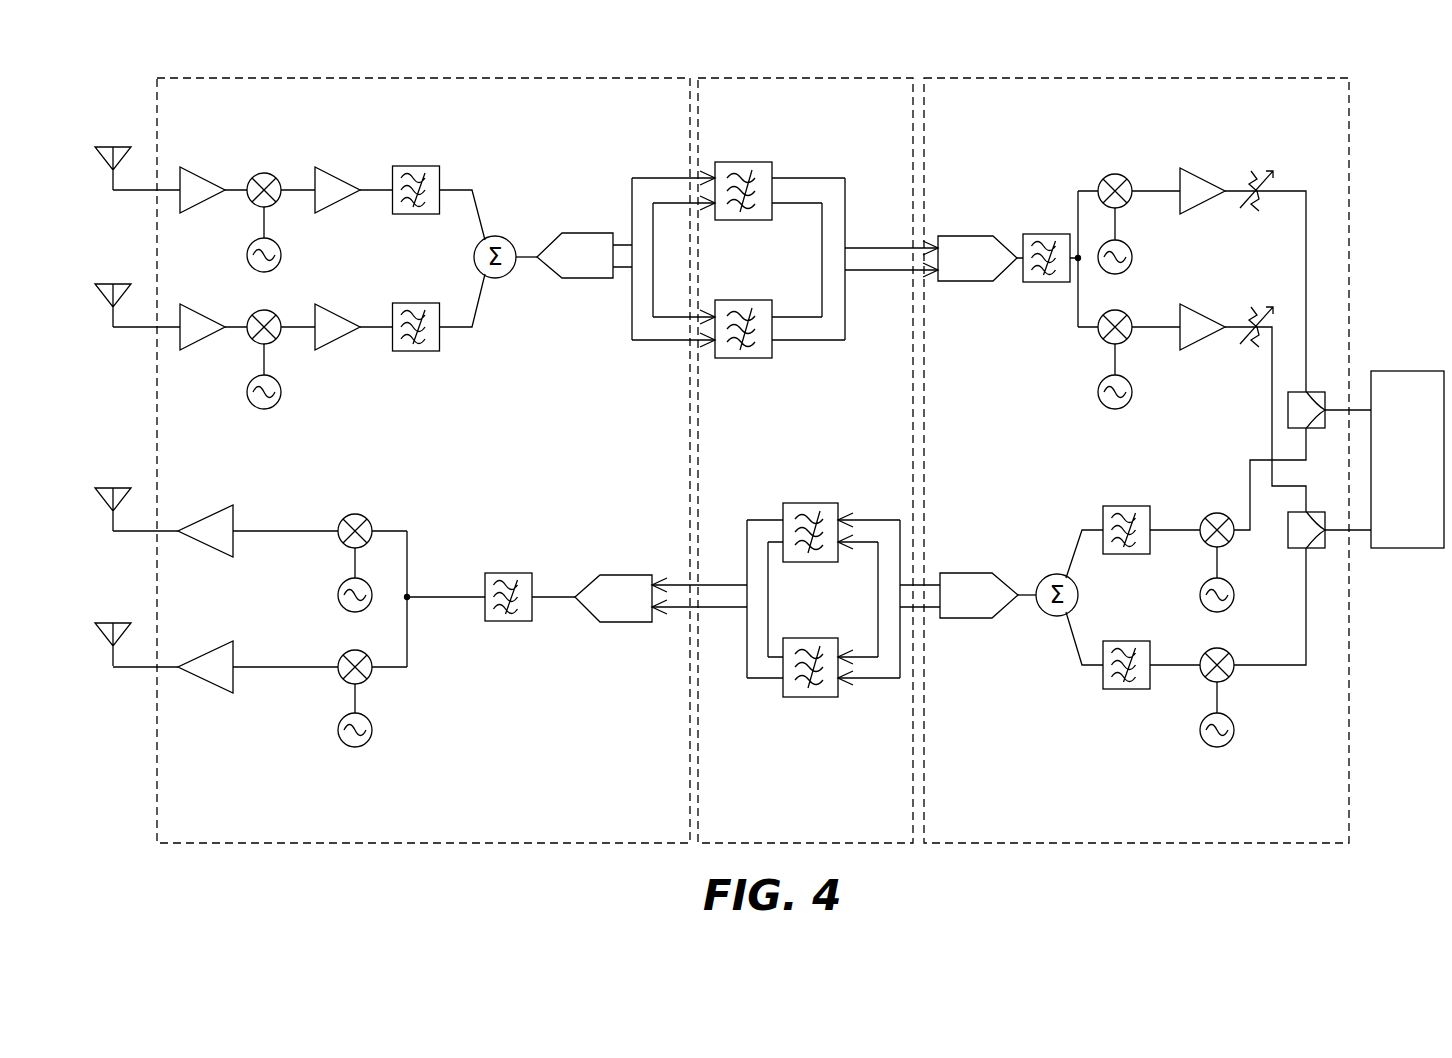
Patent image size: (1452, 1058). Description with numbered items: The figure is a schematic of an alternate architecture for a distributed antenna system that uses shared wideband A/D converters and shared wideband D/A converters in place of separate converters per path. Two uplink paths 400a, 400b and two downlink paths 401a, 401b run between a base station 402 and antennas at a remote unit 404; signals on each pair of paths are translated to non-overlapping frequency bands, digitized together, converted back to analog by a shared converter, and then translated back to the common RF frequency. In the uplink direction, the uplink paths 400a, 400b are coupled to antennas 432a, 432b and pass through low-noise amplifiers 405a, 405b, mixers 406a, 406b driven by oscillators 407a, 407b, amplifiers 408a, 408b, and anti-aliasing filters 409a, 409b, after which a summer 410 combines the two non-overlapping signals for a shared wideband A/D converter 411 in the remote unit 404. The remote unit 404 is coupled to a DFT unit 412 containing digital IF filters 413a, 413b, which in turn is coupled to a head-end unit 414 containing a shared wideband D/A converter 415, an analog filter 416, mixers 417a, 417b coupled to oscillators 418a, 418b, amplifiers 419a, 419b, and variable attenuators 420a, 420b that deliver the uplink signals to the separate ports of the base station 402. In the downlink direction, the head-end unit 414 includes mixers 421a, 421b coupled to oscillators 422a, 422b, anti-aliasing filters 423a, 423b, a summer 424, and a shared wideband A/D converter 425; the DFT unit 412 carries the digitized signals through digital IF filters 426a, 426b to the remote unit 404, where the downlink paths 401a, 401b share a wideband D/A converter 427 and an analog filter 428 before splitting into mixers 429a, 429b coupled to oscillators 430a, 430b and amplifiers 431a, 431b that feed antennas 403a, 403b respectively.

The uplink path 400a is at (140, 193).
The uplink path 400b is at (140, 330).
The downlink path 401a is at (140, 533).
The downlink path 401b is at (140, 669).
The base station 402 is at (1425, 371).
The antenna 403a is at (131, 488).
The antenna 403b is at (131, 623).
The remote unit 404 is at (407, 78).
The low-noise amplifier 405a is at (205, 180).
The low-noise amplifier 405b is at (205, 317).
The mixer 406a is at (252, 179).
The mixer 406b is at (250, 318).
The oscillator 407a is at (301, 236).
The oscillator 407b is at (301, 373).
The amplifier 408a is at (340, 179).
The amplifier 408b is at (340, 316).
The anti-aliasing filter 409a is at (428, 166).
The anti-aliasing filter 409b is at (428, 303).
The summer 410 is at (516, 277).
The shared wideband A/D converter 411 is at (592, 233).
The DFT unit 412 is at (750, 78).
The digital IF filter 413a is at (731, 221).
The digital IF filter 413b is at (731, 359).
The head-end unit 414 is at (1073, 78).
The shared wideband D/A converter 415 is at (982, 235).
The analog filter 416 is at (1060, 233).
The mixer 417a is at (1130, 178).
The mixer 417b is at (1145, 302).
The oscillator 418a is at (1132, 250).
The oscillator 418b is at (1130, 383).
The amplifier 419a is at (1200, 178).
The amplifier 419b is at (1200, 315).
The variable attenuator 420a is at (1250, 180).
The variable attenuator 420b is at (1250, 317).
The mixer 421a is at (1205, 518).
The mixer 421b is at (1234, 655).
The oscillator 422a is at (1250, 578).
The oscillator 422b is at (1250, 708).
The anti-aliasing filter 423a is at (1137, 506).
The anti-aliasing filter 423b is at (1137, 641).
The summer 424 is at (1042, 579).
The shared wideband A/D converter 425 is at (972, 573).
The digital IF filter 426a is at (800, 503).
The digital IF filter 426b is at (803, 697).
The shared wideband D/A converter 427 is at (628, 575).
The analog filter 428 is at (520, 573).
The mixer 429a is at (340, 519).
The mixer 429b is at (340, 655).
The oscillator 430a is at (338, 594).
The oscillator 430b is at (338, 730).
The amplifier 431a is at (200, 519).
The amplifier 431b is at (200, 655).
The antenna 432a is at (131, 147).
The antenna 432b is at (131, 284).